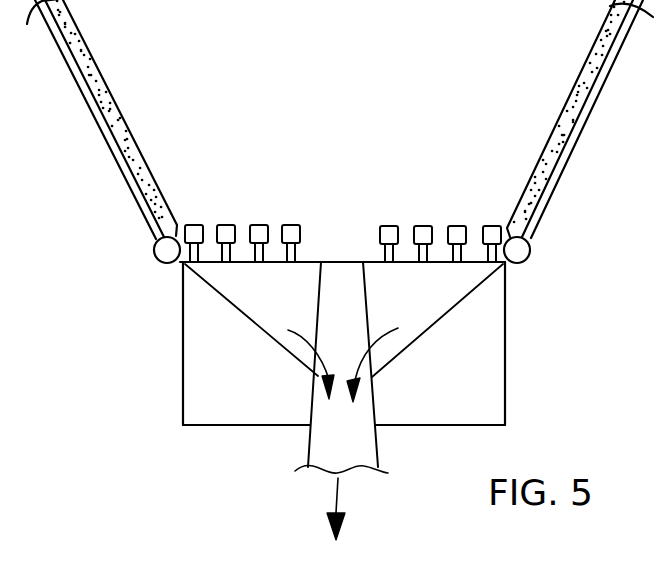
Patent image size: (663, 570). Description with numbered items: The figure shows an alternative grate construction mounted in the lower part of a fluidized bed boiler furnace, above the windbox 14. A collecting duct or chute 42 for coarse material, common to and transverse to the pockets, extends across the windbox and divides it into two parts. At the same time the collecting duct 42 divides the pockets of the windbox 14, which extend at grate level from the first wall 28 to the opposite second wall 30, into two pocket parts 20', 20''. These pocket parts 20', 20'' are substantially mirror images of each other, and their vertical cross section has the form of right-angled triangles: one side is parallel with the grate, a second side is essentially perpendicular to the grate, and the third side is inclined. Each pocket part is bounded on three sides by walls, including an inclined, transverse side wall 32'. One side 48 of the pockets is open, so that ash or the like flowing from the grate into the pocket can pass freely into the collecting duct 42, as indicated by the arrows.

The windbox 14 is at (199, 380).
The first wall 28 is at (183, 345).
The second wall 30 is at (507, 340).
The inclined transverse side wall 32' is at (185, 313).
The pocket part 20' is at (242, 208).
The pocket part 20'' is at (440, 195).
The collecting duct 42 is at (340, 292).
The open side 48 is at (320, 302).